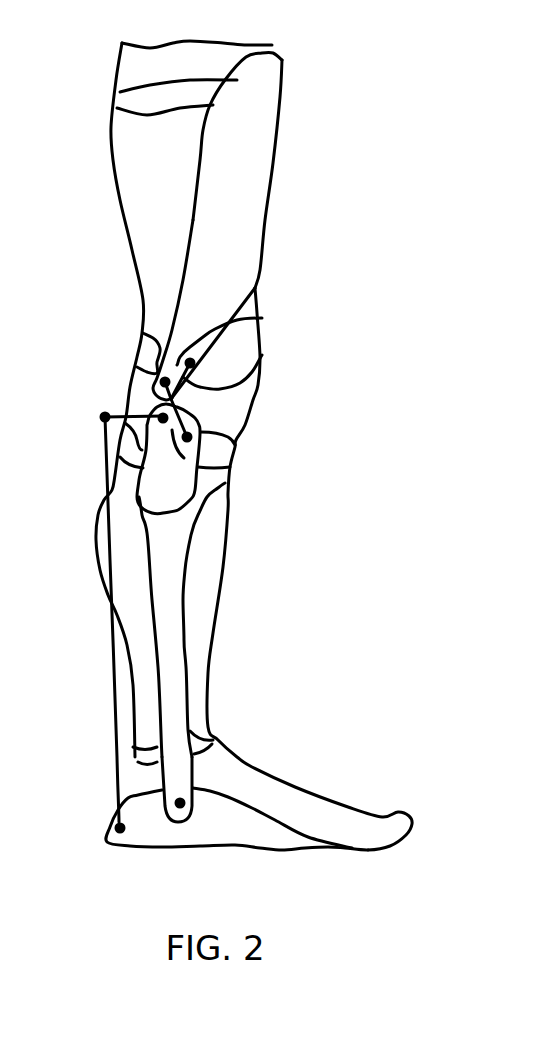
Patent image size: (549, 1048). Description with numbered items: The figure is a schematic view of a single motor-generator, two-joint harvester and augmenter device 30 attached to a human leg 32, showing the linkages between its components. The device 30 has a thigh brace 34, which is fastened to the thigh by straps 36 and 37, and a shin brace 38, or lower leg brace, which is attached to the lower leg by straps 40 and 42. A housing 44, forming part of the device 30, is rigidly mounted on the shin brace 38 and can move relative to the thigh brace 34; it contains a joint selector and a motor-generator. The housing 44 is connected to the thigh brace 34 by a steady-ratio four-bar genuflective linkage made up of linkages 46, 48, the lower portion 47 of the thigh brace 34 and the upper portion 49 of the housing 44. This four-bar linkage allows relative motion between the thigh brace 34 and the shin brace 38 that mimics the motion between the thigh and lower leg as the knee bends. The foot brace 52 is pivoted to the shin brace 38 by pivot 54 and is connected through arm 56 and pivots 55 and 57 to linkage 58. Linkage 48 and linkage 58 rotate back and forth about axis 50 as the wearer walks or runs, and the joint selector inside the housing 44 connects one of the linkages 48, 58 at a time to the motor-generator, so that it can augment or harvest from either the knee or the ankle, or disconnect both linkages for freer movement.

The single motor-generator, two-joint harvester and augmenter device 30 is at (352, 88).
The human leg 32 is at (122, 218).
The thigh brace 34 is at (270, 203).
The strap 36 is at (115, 92).
The strap 37 is at (135, 345).
The shin brace 38 is at (236, 457).
The strap 40 is at (117, 467).
The strap 42 is at (213, 740).
The housing 44 is at (188, 503).
The linkage 46 is at (197, 427).
The lower portion of the thigh brace 47 is at (262, 318).
The linkage 48 is at (258, 370).
The upper portion of the housing 49 is at (230, 470).
The axis 50 is at (158, 410).
The foot brace 52 is at (120, 845).
The pivot 54 is at (180, 803).
The pivot 55 is at (118, 828).
The arm 56 is at (112, 710).
The pivot 57 is at (105, 417).
The linkage 58 is at (158, 414).